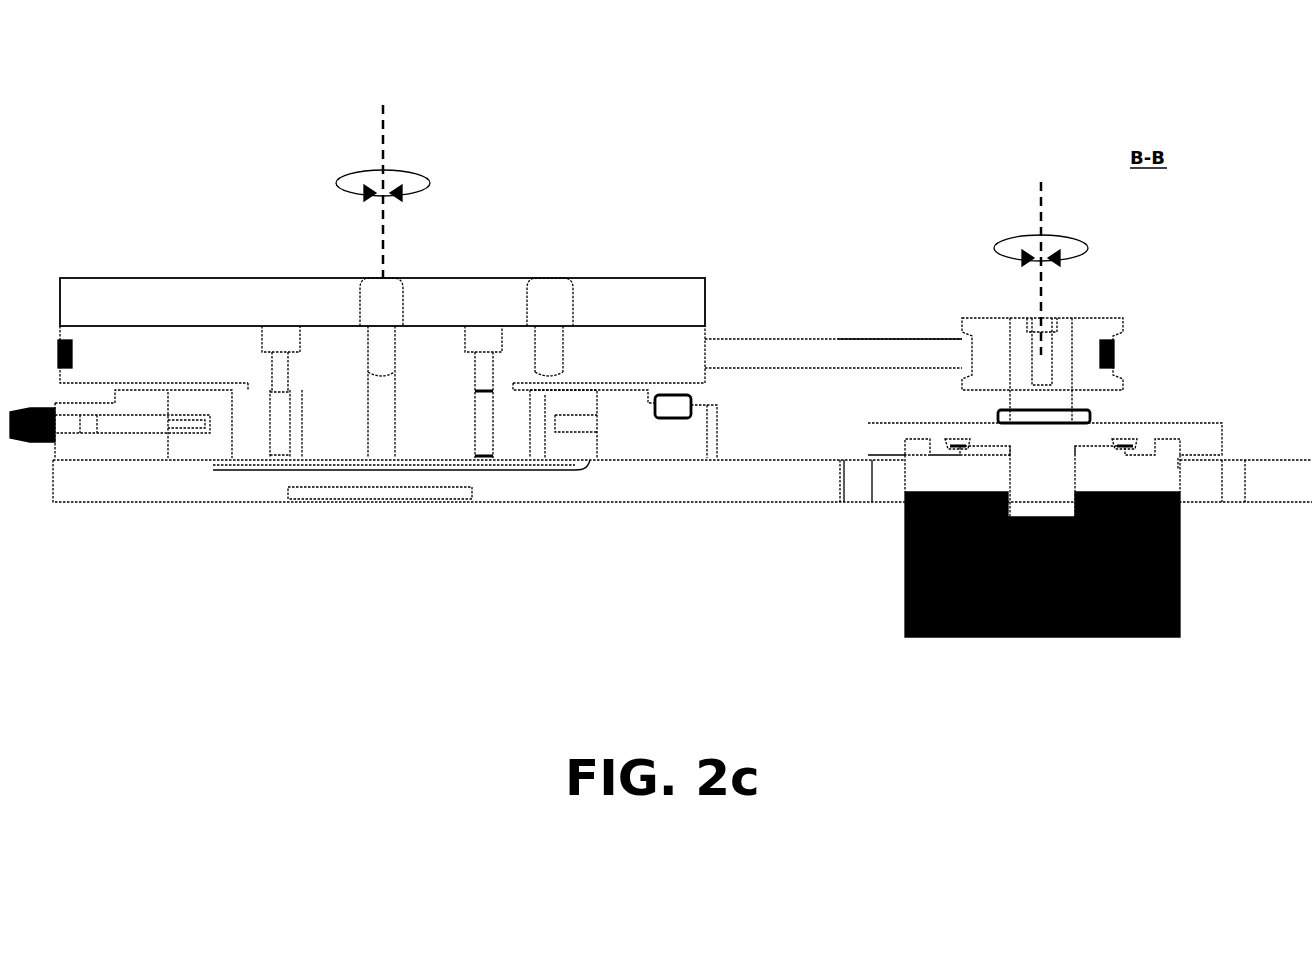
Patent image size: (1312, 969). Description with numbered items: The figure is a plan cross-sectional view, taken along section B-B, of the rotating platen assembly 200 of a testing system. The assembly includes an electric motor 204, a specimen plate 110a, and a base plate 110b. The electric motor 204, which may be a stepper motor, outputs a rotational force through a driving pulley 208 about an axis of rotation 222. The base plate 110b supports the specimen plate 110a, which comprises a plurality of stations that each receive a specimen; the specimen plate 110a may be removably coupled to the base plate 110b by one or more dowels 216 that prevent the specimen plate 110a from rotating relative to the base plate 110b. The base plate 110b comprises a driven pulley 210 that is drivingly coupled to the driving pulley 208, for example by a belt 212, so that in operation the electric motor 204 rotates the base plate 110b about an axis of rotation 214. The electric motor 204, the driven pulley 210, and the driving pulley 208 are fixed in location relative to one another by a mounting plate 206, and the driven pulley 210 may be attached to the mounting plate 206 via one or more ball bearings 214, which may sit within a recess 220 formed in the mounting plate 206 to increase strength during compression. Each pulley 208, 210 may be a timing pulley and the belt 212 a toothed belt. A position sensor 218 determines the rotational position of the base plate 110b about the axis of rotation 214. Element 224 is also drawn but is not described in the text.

The rotating platen assembly 200 is at (1068, 96).
The specimen plate 110a is at (168, 278).
The base plate 110b is at (706, 326).
The electric motor 204 is at (1182, 580).
The mounting plate 206 is at (703, 505).
The driving pulley 208 is at (1074, 318).
The driven pulley 210 is at (705, 353).
The belt 212 is at (792, 390).
The axis of rotation / ball bearings 214 is at (384, 148).
The dowels 216 is at (384, 278).
The position sensor 218 is at (672, 420).
The recess 220 is at (597, 459).
The axis of rotation 222 is at (1042, 222).
The bracket 224 is at (718, 405).